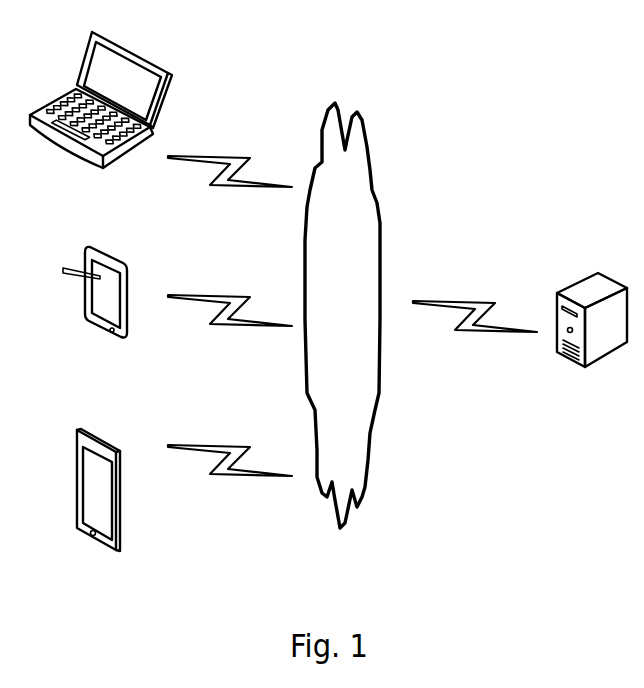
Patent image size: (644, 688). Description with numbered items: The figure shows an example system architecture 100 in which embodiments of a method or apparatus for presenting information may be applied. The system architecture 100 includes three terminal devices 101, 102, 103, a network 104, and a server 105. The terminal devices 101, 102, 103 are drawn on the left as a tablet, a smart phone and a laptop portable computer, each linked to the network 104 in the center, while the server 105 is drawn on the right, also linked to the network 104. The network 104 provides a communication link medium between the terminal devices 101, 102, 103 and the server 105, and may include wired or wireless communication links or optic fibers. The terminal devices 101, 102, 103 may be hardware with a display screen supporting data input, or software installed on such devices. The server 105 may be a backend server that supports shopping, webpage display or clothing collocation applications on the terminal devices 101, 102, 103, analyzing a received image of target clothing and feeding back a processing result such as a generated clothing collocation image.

The system architecture 100 is at (618, 82).
The terminal device 101 is at (100, 512).
The terminal device 102 is at (95, 311).
The terminal device 103 is at (101, 119).
The network 104 is at (342, 315).
The server 105 is at (592, 342).